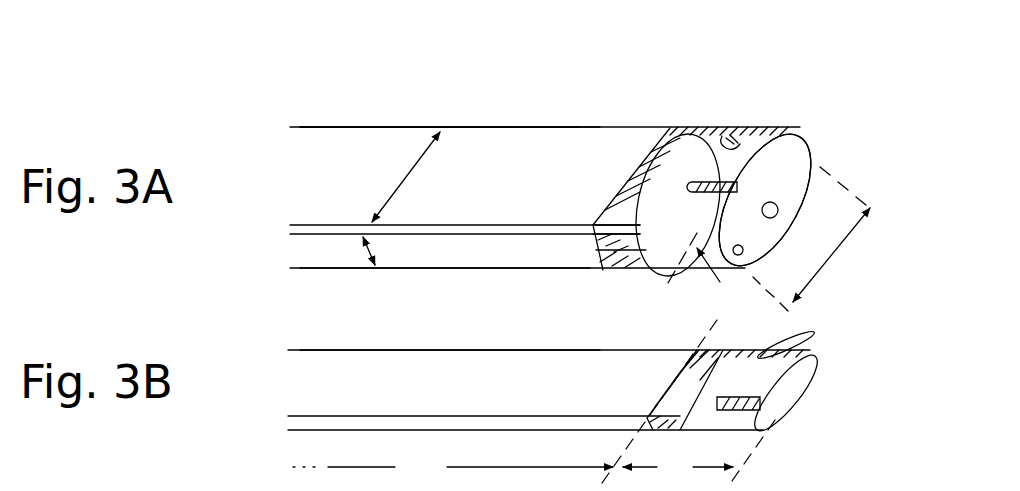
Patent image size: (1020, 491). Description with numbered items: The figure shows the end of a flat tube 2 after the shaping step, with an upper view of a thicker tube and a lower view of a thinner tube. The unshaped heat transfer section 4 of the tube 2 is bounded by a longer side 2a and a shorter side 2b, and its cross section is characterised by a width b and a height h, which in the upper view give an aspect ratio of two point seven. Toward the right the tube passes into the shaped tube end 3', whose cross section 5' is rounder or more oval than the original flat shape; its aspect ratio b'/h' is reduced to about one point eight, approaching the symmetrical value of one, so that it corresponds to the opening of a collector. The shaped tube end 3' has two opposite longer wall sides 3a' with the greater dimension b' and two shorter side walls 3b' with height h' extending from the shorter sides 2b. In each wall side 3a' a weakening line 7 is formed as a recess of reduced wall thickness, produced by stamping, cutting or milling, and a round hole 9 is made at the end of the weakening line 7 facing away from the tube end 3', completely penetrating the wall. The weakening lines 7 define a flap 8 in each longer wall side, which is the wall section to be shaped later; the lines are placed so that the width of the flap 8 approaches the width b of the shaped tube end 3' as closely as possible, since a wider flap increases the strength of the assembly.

In FIG. 3A, the flat tube 2 is at (268, 238).
In FIG. 3B, the flat tube 2 is at (272, 402).
In FIG. 3A, the longer side 2a is at (488, 170).
In FIG. 3A, the shorter side 2b is at (470, 262).
In FIG. 3A, the heat transfer section 4 is at (372, 125).
In FIG. 3B, the heat transfer section 4 is at (453, 415).
In FIG. 3A, the shaped tube end 3' is at (764, 163).
In FIG. 3B, the shaped tube end 3' is at (702, 401).
In FIG. 3A, the wall side 3a' is at (678, 156).
In FIG. 3A, the side wall 3b' is at (680, 220).
In FIG. 3A, the weakening line 7 is at (765, 133).
In FIG. 3B, the weakening line 7 is at (812, 340).
In FIG. 3A, the flap 8 is at (725, 162).
In FIG. 3B, the flap 8 is at (762, 381).
In FIG. 3A, the round hole 9 is at (737, 130).
In FIG. 3A, the cross section of the shaped tube end 5' is at (826, 159).
In FIG. 3A, the width of the tube end b is at (406, 177).
In FIG. 3A, the height of the tube end h is at (359, 251).
In FIG. 3A, the dimension of the wall side b' is at (811, 239).
In FIG. 3A, the height of the side wall h' is at (694, 272).